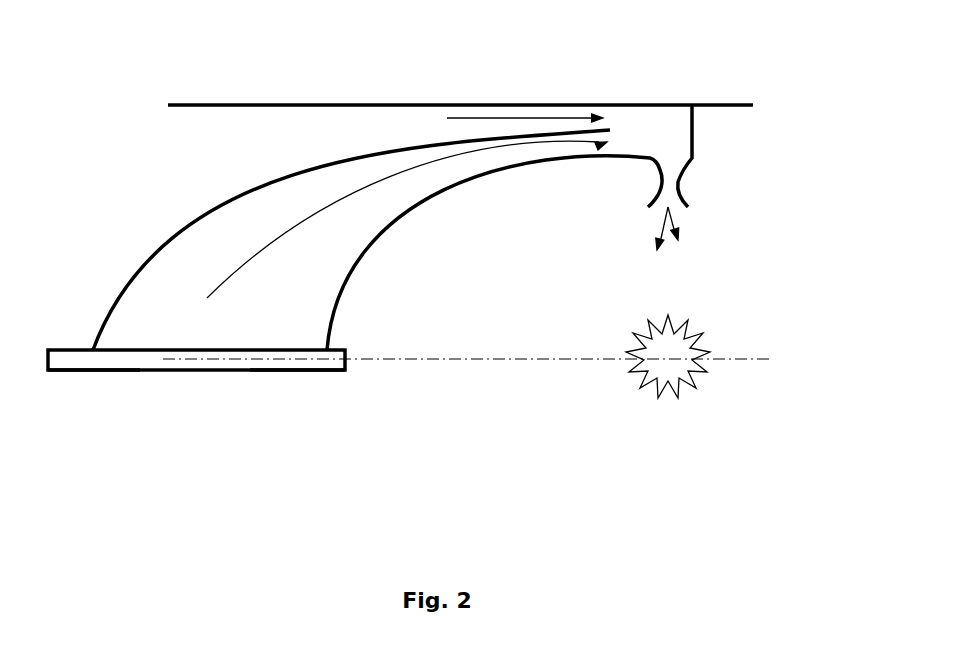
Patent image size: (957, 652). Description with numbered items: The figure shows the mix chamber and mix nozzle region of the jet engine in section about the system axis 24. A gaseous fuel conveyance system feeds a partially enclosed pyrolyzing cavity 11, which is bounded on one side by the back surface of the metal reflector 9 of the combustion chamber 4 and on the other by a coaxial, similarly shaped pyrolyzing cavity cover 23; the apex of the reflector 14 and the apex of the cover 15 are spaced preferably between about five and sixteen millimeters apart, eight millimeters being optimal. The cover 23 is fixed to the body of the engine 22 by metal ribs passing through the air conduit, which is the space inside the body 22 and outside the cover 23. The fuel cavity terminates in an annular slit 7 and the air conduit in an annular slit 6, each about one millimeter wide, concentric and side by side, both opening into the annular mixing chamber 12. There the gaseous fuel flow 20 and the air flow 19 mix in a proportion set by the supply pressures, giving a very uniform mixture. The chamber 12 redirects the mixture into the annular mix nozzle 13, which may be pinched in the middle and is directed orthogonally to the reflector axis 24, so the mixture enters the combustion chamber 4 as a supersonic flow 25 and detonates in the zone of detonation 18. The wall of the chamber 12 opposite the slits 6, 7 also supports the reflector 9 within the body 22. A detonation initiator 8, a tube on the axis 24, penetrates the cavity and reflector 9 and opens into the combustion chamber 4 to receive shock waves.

The combustion chamber 4 is at (550, 306).
The open terminal end of gaseous oxidizer supply system forming as annular slit 6 is at (600, 99).
The open terminal end of gaseous fuel supply system forming as annular slit 7 is at (597, 153).
The detonation initiator as a tube 8 is at (129, 344).
The metal reflector 9 is at (380, 216).
The cavity in between complementary shaped bodies of rotation as reflector and pyrol 11 is at (286, 242).
The mixing chamber 12 is at (665, 123).
The mix nozzle 13 is at (691, 178).
The apex of reflector 14 is at (321, 370).
The apex of pyrolyzing cavity cover 15 is at (92, 372).
The zone of detonation 18 is at (673, 368).
The gaseous oxidizer flow 19 is at (492, 102).
The gaseous fuel flow 20 is at (424, 157).
The body of jet engine 22 is at (376, 93).
The pyrolyzing cavity cover 23 is at (188, 212).
The system axis 24 is at (489, 358).
The supersonic flow of gaseous fuel and air mixture 25 is at (702, 235).